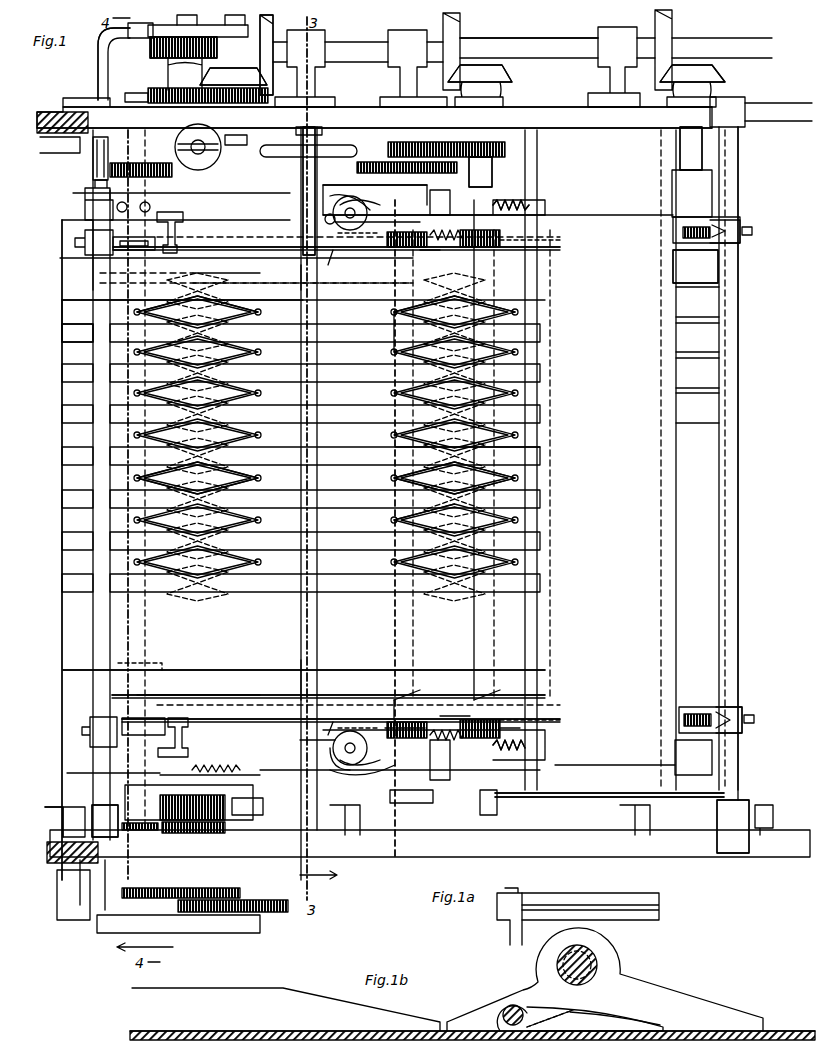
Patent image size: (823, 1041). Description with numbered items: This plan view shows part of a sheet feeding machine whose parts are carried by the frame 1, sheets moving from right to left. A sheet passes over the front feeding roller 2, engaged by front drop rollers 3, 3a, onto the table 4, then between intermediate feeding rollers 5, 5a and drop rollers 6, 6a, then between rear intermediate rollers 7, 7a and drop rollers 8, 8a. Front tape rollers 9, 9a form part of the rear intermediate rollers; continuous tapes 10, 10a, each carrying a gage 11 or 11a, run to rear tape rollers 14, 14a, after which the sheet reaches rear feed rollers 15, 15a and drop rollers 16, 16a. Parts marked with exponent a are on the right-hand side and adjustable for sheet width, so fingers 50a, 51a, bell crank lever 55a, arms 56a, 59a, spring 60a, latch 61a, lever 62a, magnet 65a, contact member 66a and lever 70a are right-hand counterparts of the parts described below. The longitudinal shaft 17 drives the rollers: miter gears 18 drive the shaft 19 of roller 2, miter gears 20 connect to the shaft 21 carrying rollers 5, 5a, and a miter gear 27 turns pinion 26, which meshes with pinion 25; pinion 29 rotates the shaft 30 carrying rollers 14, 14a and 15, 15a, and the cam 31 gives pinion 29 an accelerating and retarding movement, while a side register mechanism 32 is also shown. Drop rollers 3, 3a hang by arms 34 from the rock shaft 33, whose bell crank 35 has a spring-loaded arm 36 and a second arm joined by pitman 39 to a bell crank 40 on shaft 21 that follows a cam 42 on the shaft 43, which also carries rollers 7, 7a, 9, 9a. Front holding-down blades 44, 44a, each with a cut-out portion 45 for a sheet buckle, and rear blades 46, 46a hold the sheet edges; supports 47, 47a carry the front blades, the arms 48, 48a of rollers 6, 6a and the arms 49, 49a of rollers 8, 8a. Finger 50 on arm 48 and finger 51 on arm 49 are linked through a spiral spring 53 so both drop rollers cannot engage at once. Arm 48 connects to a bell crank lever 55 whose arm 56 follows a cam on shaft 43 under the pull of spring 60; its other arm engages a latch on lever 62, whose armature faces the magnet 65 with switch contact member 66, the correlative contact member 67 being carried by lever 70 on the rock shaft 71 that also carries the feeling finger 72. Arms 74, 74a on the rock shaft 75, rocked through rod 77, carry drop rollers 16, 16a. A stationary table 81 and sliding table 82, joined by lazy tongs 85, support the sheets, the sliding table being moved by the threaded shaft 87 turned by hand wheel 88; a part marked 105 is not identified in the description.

In FIG. 1, the frame 1 is at (542, 108).
In FIG. 1, the front feeding roller 2 is at (695, 266).
In FIG. 1, the front drop roller 3 is at (690, 712).
In FIG. 1, the front drop roller 3a is at (700, 232).
In FIG. 1, the table 4 is at (357, 258).
In FIG. 1, the intermediate feeding roller 5 is at (545, 718).
In FIG. 1, the intermediate feeding roller 5a is at (538, 239).
In FIG. 1, the drop roller 6 is at (495, 725).
In FIG. 1, the drop roller 6a is at (493, 248).
In FIG. 1, the rear intermediate roller 7 is at (359, 730).
In FIG. 1, the rear intermediate roller 7a is at (359, 235).
In FIG. 1, the drop roller 8 is at (78, 241).
In FIG. 1, the drop roller 8a is at (398, 250).
In FIG. 1, the front tape roller 9 is at (380, 700).
In FIG. 1, the front tape roller 9a is at (375, 250).
In FIG. 1, the tape 10 is at (240, 700).
In FIG. 1, the tape 10a is at (303, 269).
In FIG. 1, the gage 11 is at (204, 700).
In FIG. 1, the gage 11a is at (226, 265).
In FIG. 1, the rear tape roller 14 is at (170, 700).
In FIG. 1, the rear tape roller 14a is at (160, 302).
In FIG. 1, the rear feed roller 15 is at (188, 740).
In FIG. 1, the rear feed roller 15a is at (200, 240).
In FIG. 1, the drop roller 16 is at (130, 738).
In FIG. 1, the drop roller 16a is at (110, 268).
In FIG. 1, the longitudinal shaft 17 is at (530, 43).
In FIG. 1, the miter gears 18 is at (683, 77).
In FIG. 1, the shaft 19 is at (680, 153).
In FIG. 1, the miter gears 20 is at (480, 73).
In FIG. 1, the shaft 21 is at (495, 165).
In FIG. 1, the pinion 25 is at (165, 58).
In FIG. 1, the second pinion 26 is at (272, 90).
In FIG. 1, the miter gear 27 is at (233, 76).
In FIG. 1, the pinion 29 is at (153, 176).
In FIG. 1, the shaft 30 is at (145, 615).
In FIG. 1, the cam 31 is at (182, 147).
In FIG. 1, the side register mechanism 32 is at (205, 853).
In FIG. 1, the rock shaft 33 is at (758, 661).
In FIG. 1, the arms 34 is at (722, 228).
In FIG. 1, the bell crank 35 is at (740, 800).
In FIG. 1, the arm 36 is at (770, 805).
In FIG. 1, the pitman 39 is at (642, 793).
In FIG. 1, the bell crank 40 is at (457, 812).
In FIG. 1, the cam 42 is at (392, 800).
In FIG. 1, the shaft 43 is at (400, 514).
In FIG. 1, the front holding-down blade 44 is at (440, 722).
In FIG. 1B, the front holding-down blade 44 is at (660, 992).
In FIG. 1, the front holding-down blade 44a is at (465, 250).
In FIG. 1B, the cut-out portion 45 is at (610, 1007).
In FIG. 1, the rear holding-down blade 46 is at (276, 720).
In FIG. 1B, the rear holding-down blade 46 is at (330, 1018).
In FIG. 1, the rear holding-down blade 46a is at (255, 247).
In FIG. 1B, the support 47 is at (597, 960).
In FIG. 1, the support 47a is at (455, 160).
In FIG. 1, the arm 48 is at (478, 718).
In FIG. 1, the arm 48a is at (470, 222).
In FIG. 1, the arm 49 is at (408, 725).
In FIG. 1, the arm 49a is at (400, 282).
In FIG. 1, the finger 50 is at (470, 722).
In FIG. 1, the link 50a is at (480, 302).
In FIG. 1, the finger 51 is at (425, 715).
In FIG. 1, the link 51a is at (405, 300).
In FIG. 1, the spiral spring 53 is at (450, 715).
In FIG. 1, the bell crank lever 55 is at (440, 765).
In FIG. 1, the post 55a is at (445, 208).
In FIG. 1, the arm 56 is at (410, 750).
In FIG. 1, the arm 56a is at (385, 200).
In FIG. 1, the link 59a is at (433, 252).
In FIG. 1, the spring 60 is at (540, 745).
In FIG. 1, the spring 60a is at (525, 205).
In FIG. 1, the pin 61a is at (333, 223).
In FIG. 1, the lever 62 is at (359, 745).
In FIG. 1, the disc 62a is at (360, 213).
In FIG. 1, the magnet 65 is at (335, 758).
In FIG. 1, the arm 65a is at (338, 203).
In FIG. 1, the switch contact member 66 is at (345, 735).
In FIG. 1, the link 66a is at (350, 224).
In FIG. 1, the switch contact member 67 is at (325, 740).
In FIG. 1, the lever 70 is at (360, 777).
In FIG. 1, the hook 70a is at (330, 196).
In FIG. 1A, the rock shaft 71 is at (508, 934).
In FIG. 1B, the rock shaft 71 is at (513, 1010).
In FIG. 1A, the feeling finger 72 is at (590, 896).
In FIG. 1B, the feeling finger 72 is at (573, 1012).
In FIG. 1, the arm 74 is at (120, 718).
In FIG. 1, the arm 74a is at (130, 253).
In FIG. 1, the rock shaft 75 is at (100, 628).
In FIG. 1, the rod 77 is at (65, 805).
In FIG. 1, the stationary table 81 is at (372, 530).
In FIG. 1, the sliding table 82 is at (182, 291).
In FIG. 1, the lazy tongs 85 is at (326, 478).
In FIG. 1, the shaft 87 is at (303, 170).
In FIG. 1, the hand wheel 88 is at (296, 154).
In FIG. 1, the finger 105 is at (52, 440).